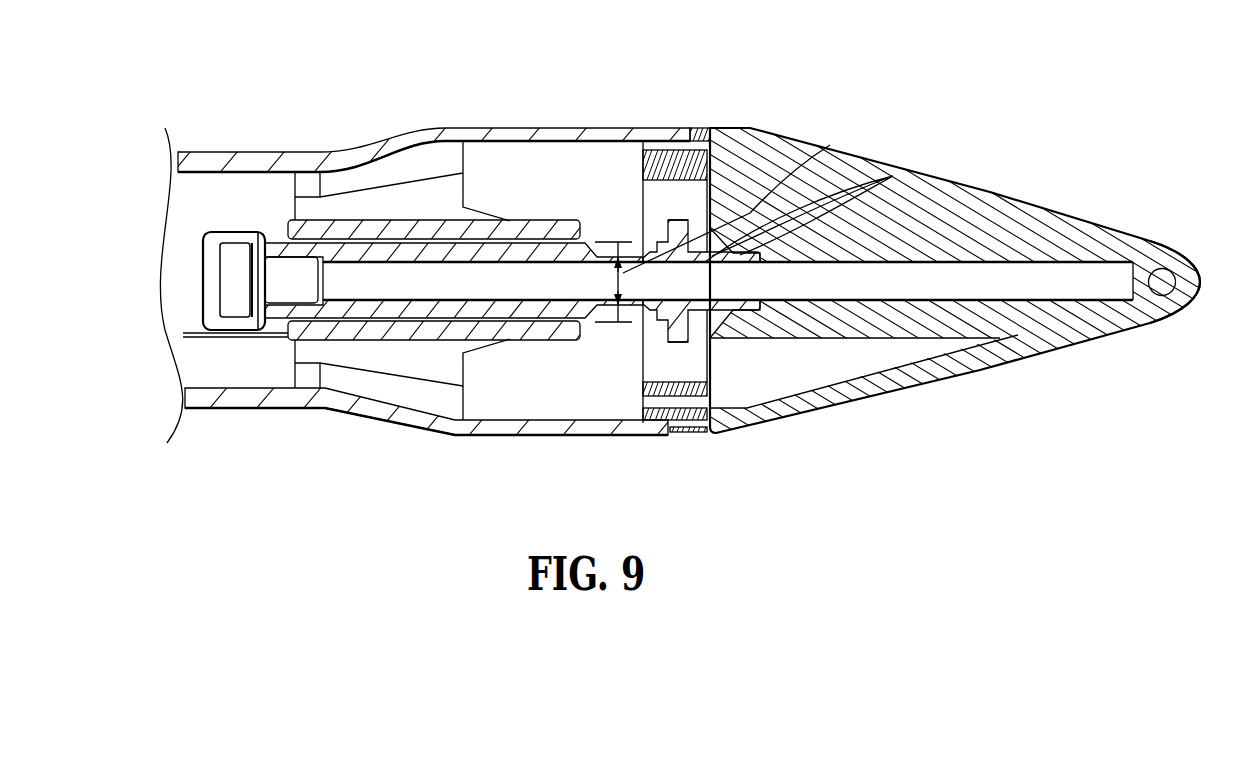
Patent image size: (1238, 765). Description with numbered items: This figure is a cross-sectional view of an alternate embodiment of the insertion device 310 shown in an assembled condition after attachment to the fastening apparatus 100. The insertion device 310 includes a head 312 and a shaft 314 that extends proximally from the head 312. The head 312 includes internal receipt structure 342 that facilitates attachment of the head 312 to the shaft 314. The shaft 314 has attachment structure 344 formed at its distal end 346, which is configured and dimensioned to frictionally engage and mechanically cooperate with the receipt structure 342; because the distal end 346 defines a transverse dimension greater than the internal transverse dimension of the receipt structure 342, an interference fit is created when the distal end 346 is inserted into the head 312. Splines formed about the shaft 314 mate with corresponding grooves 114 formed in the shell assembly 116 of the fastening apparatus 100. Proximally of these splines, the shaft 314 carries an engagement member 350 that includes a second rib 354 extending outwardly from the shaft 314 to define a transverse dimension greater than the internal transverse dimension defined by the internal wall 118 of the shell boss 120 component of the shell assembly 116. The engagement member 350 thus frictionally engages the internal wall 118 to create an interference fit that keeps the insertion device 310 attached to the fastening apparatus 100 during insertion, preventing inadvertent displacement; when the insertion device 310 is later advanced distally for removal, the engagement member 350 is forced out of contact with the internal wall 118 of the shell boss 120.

The fastening apparatus 100 is at (484, 251).
The shell assembly 116 is at (265, 152).
The grooves 114 is at (342, 300).
The shaft 314 is at (427, 245).
The shell boss 120 is at (513, 210).
The internal wall 118 is at (543, 238).
The engagement member 350 is at (570, 228).
The second rib 354 is at (557, 247).
The attachment structure 344 is at (893, 176).
The insertion device 310 is at (702, 280).
The head 312 is at (1056, 203).
The receipt structure 342 is at (740, 315).
The distal end 346 is at (718, 310).